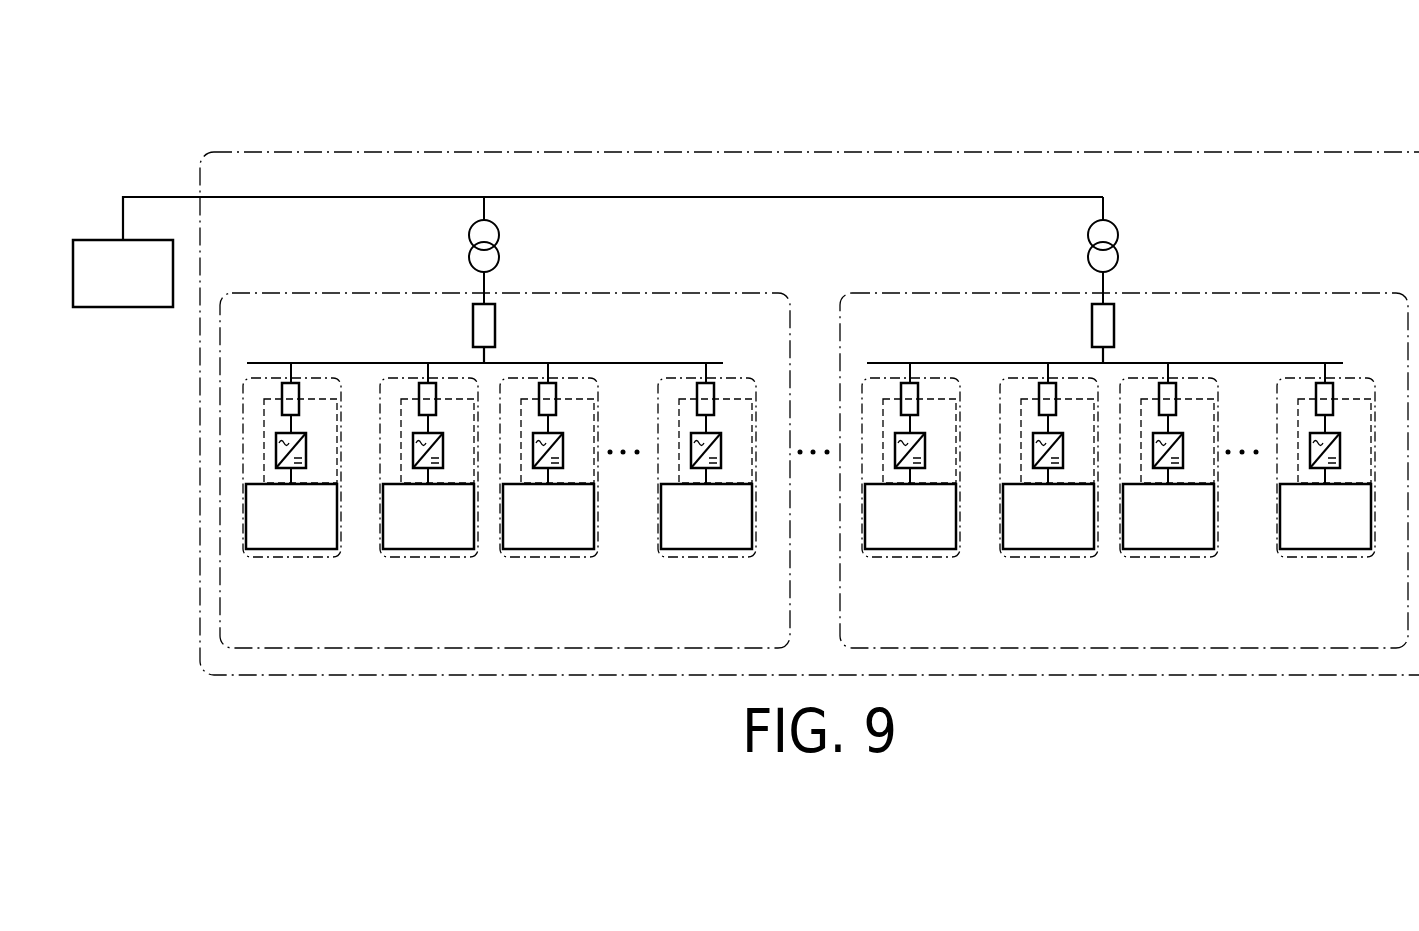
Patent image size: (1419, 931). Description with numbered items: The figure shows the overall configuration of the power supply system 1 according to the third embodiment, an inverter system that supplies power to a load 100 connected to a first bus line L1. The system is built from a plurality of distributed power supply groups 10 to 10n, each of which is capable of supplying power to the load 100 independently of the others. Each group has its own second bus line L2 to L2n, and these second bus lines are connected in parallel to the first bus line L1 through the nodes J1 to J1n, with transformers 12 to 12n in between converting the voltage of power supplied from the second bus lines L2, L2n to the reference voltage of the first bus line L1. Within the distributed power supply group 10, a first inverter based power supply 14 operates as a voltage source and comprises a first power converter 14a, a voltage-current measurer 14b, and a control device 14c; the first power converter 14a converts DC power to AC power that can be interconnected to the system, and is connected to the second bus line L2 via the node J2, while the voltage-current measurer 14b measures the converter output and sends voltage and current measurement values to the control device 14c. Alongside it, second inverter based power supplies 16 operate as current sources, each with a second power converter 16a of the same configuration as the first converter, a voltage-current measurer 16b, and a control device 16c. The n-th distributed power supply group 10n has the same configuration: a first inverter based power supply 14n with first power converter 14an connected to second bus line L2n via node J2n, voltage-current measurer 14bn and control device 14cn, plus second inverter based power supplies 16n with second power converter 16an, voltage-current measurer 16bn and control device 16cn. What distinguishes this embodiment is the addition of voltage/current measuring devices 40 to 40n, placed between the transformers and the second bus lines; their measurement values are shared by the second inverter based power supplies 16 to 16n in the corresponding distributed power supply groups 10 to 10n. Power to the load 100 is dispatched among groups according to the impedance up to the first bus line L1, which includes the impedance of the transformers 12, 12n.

The power supply system 1 is at (1247, 77).
The load 100 is at (128, 308).
The distributed power supply group 10 is at (505, 442).
The distributed power supply group 10n is at (1124, 440).
The transformer 12 is at (499, 246).
The transformer 12n is at (1118, 246).
The voltage/current measuring device 40 is at (496, 330).
The voltage/current measuring device 40n is at (1115, 330).
The first inverter based power supply 14 is at (317, 486).
The first power converter 14a is at (317, 437).
The voltage-current measurer 14b is at (320, 391).
The control device 14c is at (301, 497).
The second inverter based power supply 16 is at (438, 495).
The second power converter 16a is at (454, 437).
The voltage-current measurer 16b is at (457, 391).
The control device 16c is at (438, 497).
The first inverter based power supply 14n is at (945, 486).
The first power converter 14an is at (948, 437).
The voltage-current measurer 14bn is at (951, 391).
The control device 14cn is at (932, 497).
The second inverter based power supply 16n is at (1069, 495).
The second power converter 16an is at (1086, 437).
The voltage-current measurer 16bn is at (1089, 391).
The control device 16cn is at (1070, 497).
The node J1 is at (484, 197).
The node J1n is at (1103, 197).
The first bus line L1 is at (764, 197).
The node J2 is at (289, 363).
The node J2n is at (909, 363).
The second bus line L2 is at (591, 363).
The second bus line L2n is at (1211, 363).